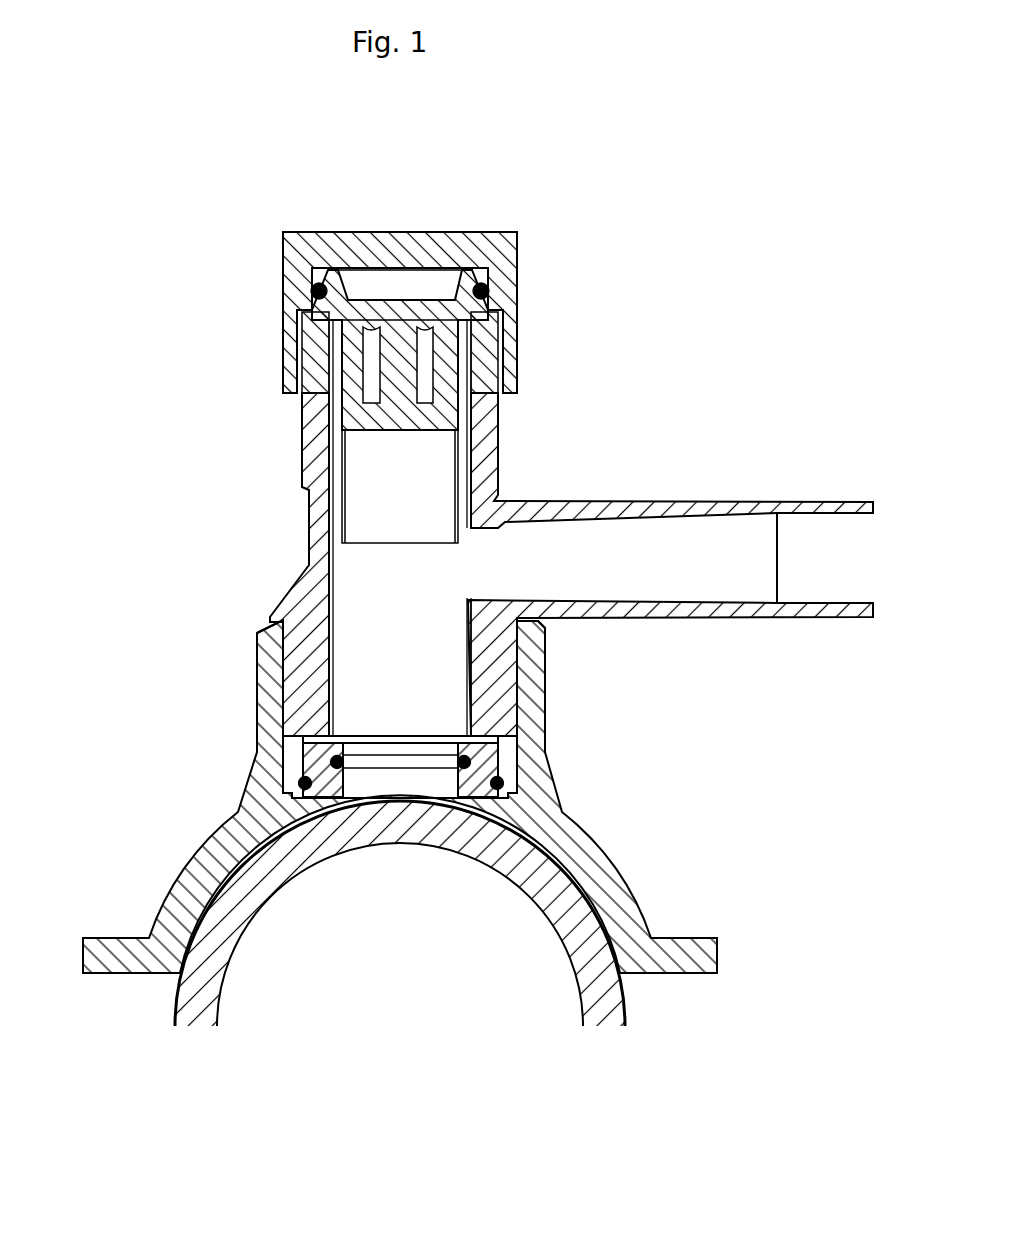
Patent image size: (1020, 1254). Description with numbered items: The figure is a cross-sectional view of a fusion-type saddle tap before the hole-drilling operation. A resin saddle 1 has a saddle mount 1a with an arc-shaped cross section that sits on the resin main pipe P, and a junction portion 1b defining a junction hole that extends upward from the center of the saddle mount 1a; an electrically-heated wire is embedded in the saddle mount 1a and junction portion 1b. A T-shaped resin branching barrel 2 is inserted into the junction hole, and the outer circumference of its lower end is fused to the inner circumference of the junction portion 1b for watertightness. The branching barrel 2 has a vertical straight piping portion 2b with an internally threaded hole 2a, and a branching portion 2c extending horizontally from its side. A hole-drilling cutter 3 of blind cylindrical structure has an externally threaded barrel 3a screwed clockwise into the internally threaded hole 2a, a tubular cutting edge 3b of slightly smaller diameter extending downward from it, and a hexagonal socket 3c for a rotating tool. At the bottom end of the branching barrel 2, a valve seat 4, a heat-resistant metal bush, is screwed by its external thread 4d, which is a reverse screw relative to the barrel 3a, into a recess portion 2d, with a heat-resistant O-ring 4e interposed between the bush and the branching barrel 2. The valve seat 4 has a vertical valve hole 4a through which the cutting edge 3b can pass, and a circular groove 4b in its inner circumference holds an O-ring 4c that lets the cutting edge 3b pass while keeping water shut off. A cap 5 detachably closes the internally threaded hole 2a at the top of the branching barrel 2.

The saddle 1 is at (391, 796).
The saddle mount 1a is at (188, 885).
The junction portion 1b is at (300, 665).
The branching barrel 2 is at (498, 580).
The internally threaded hole 2a is at (332, 564).
The straight piping portion 2b is at (302, 440).
The branching portion 2c is at (690, 502).
The recess portion 2d is at (305, 765).
The hole-drilling cutter 3 is at (381, 503).
The externally threaded barrel 3a is at (345, 356).
The tubular cutting edge 3b is at (345, 496).
The hexagonal socket 3c is at (392, 362).
The valve seat 4 is at (487, 804).
The valve hole 4a is at (378, 785).
The circular groove 4b is at (423, 765).
The O-ring 4c is at (470, 746).
The external thread 4d is at (500, 758).
The heat-resistant O-ring 4e is at (497, 790).
The cap 5 is at (415, 232).
The resin main pipe P is at (625, 995).